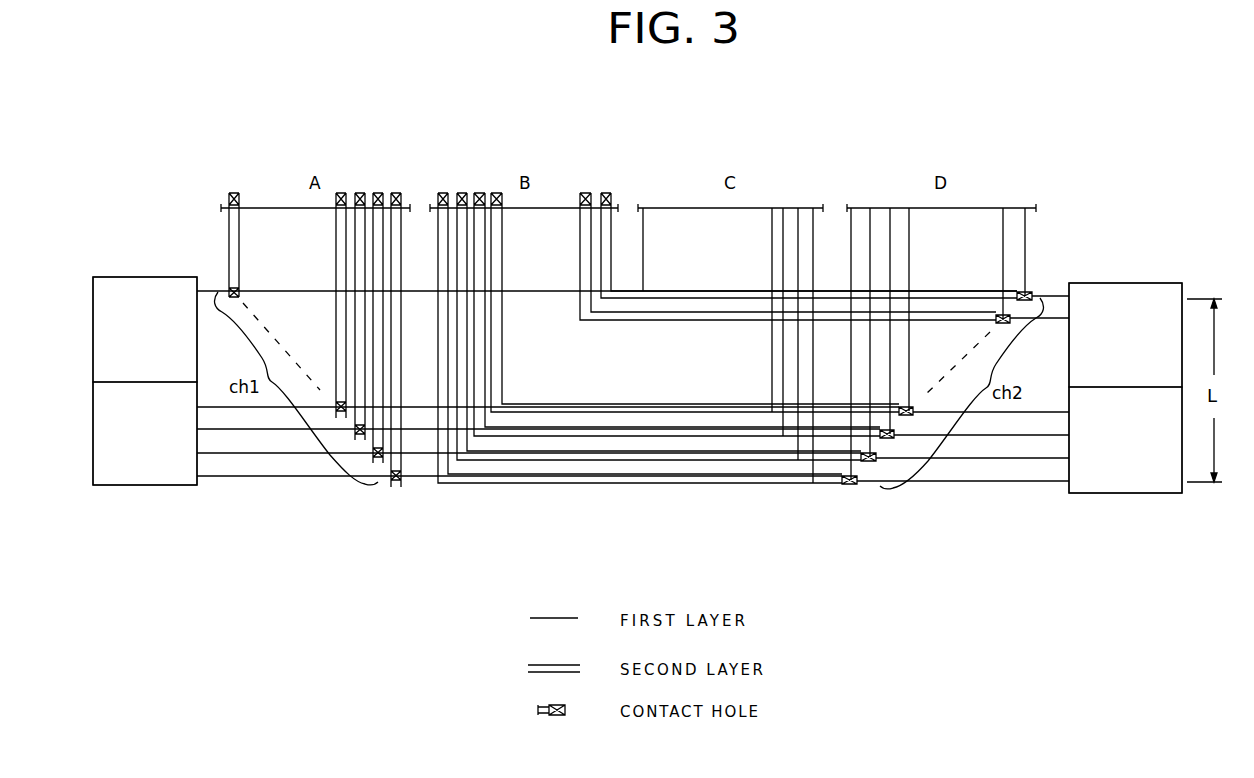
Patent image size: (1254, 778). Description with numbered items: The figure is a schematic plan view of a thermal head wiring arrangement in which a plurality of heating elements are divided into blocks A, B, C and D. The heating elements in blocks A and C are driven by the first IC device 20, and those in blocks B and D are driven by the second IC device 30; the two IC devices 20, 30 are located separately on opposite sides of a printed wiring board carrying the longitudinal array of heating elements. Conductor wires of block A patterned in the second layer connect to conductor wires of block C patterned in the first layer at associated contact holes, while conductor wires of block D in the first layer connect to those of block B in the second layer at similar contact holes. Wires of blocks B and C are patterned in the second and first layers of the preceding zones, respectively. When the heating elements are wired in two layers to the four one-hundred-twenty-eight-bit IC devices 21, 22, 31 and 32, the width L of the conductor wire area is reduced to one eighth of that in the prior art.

The first IC device 20 is at (80, 383).
The 128-bit IC device 21 is at (133, 277).
The 128-bit IC device 22 is at (152, 487).
The second IC device 30 is at (1193, 288).
The 128-bit IC device 31 is at (1113, 283).
The 128-bit IC device 32 is at (1130, 493).